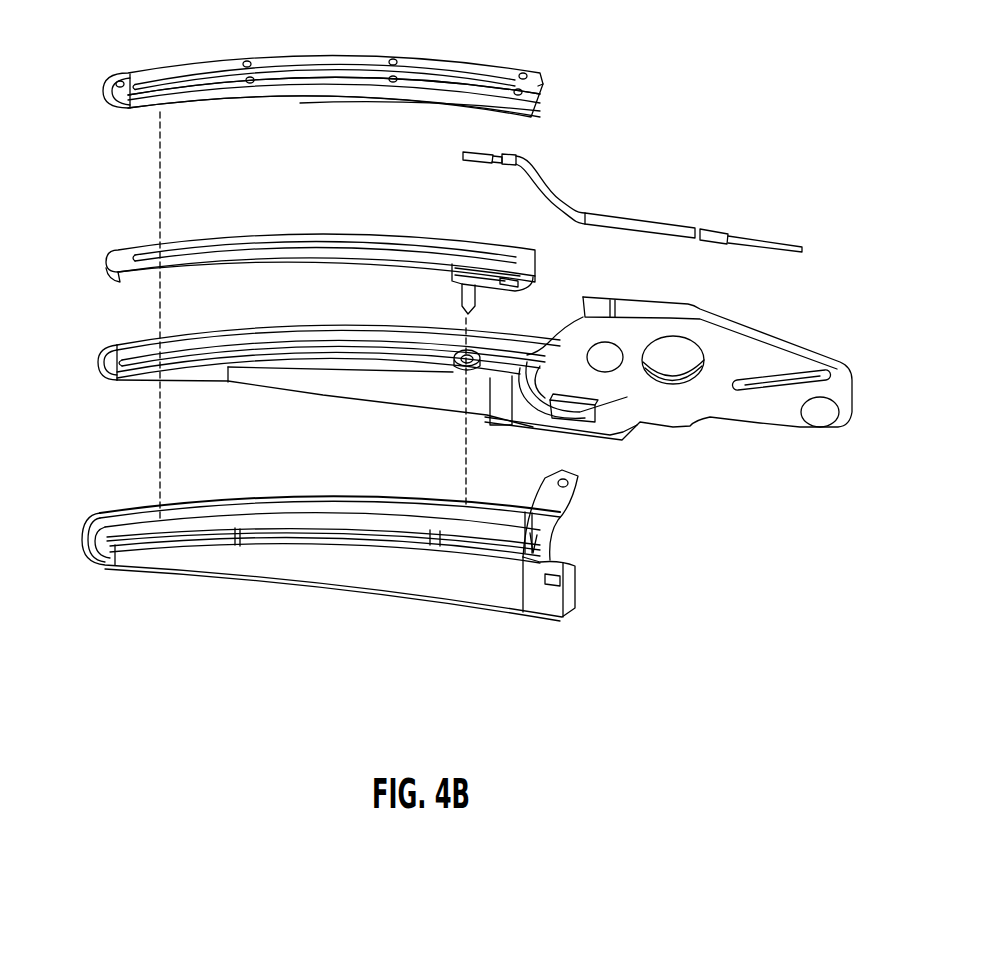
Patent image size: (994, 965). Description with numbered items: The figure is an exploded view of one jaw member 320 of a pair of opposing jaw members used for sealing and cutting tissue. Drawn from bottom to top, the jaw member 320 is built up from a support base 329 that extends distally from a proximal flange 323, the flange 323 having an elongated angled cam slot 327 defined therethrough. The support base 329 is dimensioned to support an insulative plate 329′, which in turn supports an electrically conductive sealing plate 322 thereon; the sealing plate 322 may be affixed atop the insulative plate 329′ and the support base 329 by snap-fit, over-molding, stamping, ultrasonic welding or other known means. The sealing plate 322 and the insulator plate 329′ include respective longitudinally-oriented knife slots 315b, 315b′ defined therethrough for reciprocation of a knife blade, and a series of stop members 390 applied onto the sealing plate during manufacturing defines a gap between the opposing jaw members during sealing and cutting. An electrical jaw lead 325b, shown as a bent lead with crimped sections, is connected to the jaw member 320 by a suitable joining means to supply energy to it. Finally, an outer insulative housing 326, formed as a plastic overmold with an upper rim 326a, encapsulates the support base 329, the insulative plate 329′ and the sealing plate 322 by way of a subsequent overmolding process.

The jaw member 320 is at (703, 58).
The sealing plate 322 is at (352, 55).
The proximal flange 323 is at (757, 333).
The electrical jaw lead 325b is at (618, 222).
The outer insulative housing 326 is at (390, 578).
The shell rim 326a is at (322, 486).
The elongated angled cam slot 327 is at (768, 388).
The support base 329 is at (345, 327).
The insulative plate 329′ is at (295, 240).
The knife slot 315b is at (440, 62).
The knife slot 315b′ is at (396, 246).
The stop members 390 is at (120, 81).